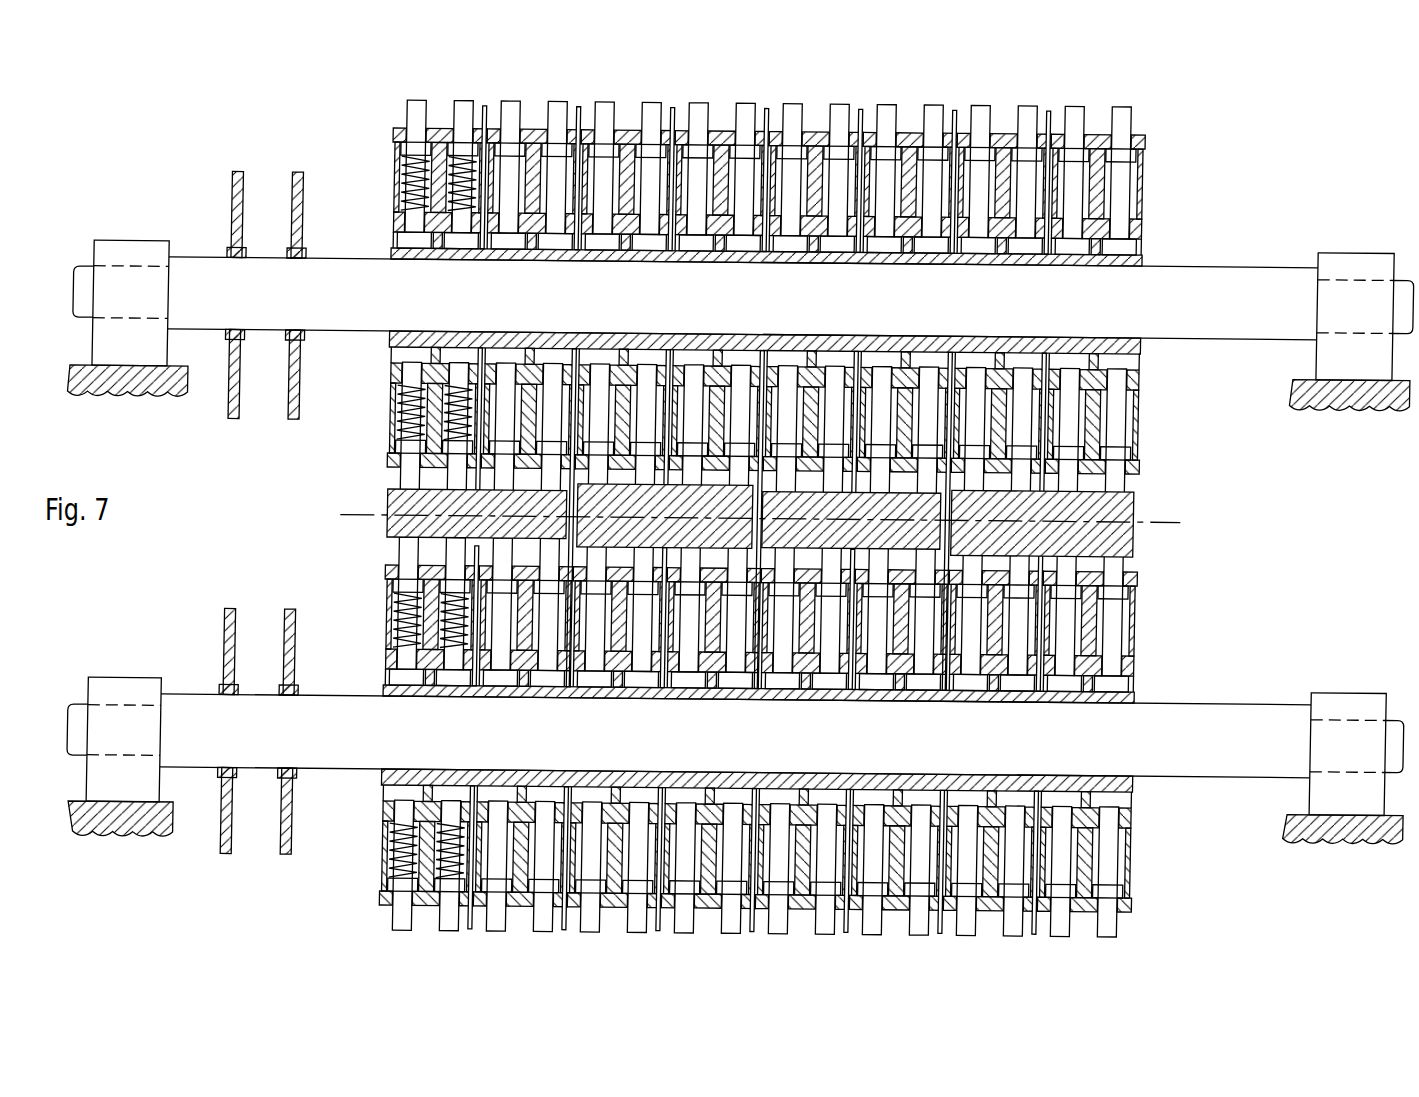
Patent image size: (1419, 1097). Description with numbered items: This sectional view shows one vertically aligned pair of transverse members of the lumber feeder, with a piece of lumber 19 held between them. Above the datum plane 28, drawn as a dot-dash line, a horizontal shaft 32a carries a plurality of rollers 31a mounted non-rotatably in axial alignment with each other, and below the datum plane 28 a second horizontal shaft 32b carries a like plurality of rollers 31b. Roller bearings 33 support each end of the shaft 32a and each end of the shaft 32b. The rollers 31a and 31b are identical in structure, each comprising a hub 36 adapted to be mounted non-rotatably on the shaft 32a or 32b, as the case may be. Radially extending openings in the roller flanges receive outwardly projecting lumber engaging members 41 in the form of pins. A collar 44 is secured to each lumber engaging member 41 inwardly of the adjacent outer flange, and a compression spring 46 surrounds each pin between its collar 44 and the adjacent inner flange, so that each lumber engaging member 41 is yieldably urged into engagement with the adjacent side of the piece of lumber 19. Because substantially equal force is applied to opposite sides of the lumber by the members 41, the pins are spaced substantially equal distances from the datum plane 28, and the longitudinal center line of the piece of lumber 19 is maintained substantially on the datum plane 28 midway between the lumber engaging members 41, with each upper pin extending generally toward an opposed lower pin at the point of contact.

The piece of lumber 19 is at (734, 515).
The datum plane 28 is at (729, 495).
The roller 31a is at (764, 378).
The roller 31b is at (760, 766).
The horizontal shaft 32a is at (743, 273).
The horizontal shaft 32b is at (735, 764).
The roller bearing 33 is at (736, 510).
The hub 36 is at (763, 499).
The lumber engaging member 41 is at (758, 516).
The collar 44 is at (761, 517).
The compression spring 46 is at (403, 517).